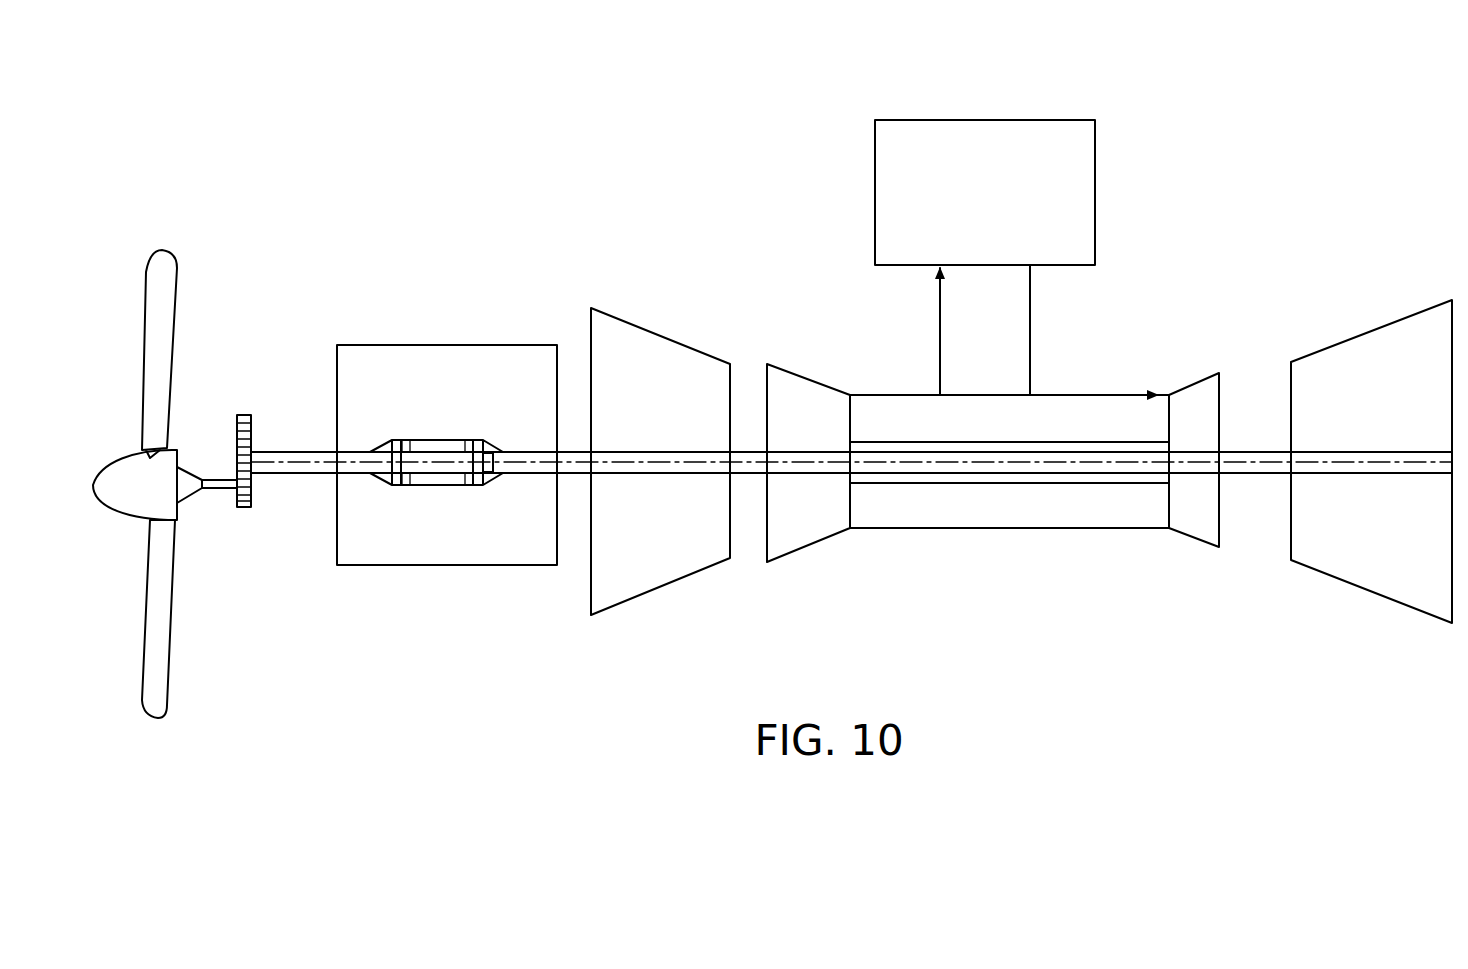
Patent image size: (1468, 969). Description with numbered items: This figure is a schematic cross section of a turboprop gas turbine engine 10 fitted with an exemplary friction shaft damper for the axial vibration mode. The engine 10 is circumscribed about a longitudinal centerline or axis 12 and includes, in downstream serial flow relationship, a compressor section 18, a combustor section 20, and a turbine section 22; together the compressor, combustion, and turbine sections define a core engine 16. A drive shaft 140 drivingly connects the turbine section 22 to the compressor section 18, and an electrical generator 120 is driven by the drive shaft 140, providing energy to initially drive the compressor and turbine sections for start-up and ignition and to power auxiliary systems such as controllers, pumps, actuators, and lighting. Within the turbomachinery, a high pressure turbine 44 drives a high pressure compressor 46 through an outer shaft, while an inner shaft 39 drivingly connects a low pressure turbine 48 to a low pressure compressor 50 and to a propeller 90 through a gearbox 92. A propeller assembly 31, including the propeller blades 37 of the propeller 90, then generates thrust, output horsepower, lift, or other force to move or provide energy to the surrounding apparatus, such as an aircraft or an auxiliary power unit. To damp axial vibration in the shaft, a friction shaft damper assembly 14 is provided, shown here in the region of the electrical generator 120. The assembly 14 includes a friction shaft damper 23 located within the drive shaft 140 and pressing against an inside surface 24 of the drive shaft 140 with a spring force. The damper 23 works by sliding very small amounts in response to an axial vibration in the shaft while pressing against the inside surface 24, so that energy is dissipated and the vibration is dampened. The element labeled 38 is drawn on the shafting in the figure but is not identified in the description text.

The turboprop engine 10 is at (524, 142).
The longitudinal centerline or axis 12 is at (915, 465).
The friction shaft damper assembly 14 is at (412, 508).
The core engine 16 is at (1220, 575).
The compressor section 18 is at (655, 590).
The combustor section 20 is at (964, 206).
The turbine section 22 is at (1220, 376).
The friction shaft damper 23 is at (426, 447).
The inside surface 24 is at (450, 447).
The propeller assembly 31 is at (202, 628).
The propeller blades 37 is at (148, 272).
The shaft segment 38 is at (1143, 485).
The inner shaft 39 is at (988, 475).
The high pressure turbine 44 is at (1185, 385).
The high pressure compressor 46 is at (800, 374).
The low pressure turbine 48 is at (1363, 590).
The low pressure compressor 50 is at (640, 326).
The propeller 90 is at (158, 718).
The gearbox 92 is at (252, 505).
The electrical generator 120 is at (346, 386).
The drive shaft 140 is at (1085, 475).